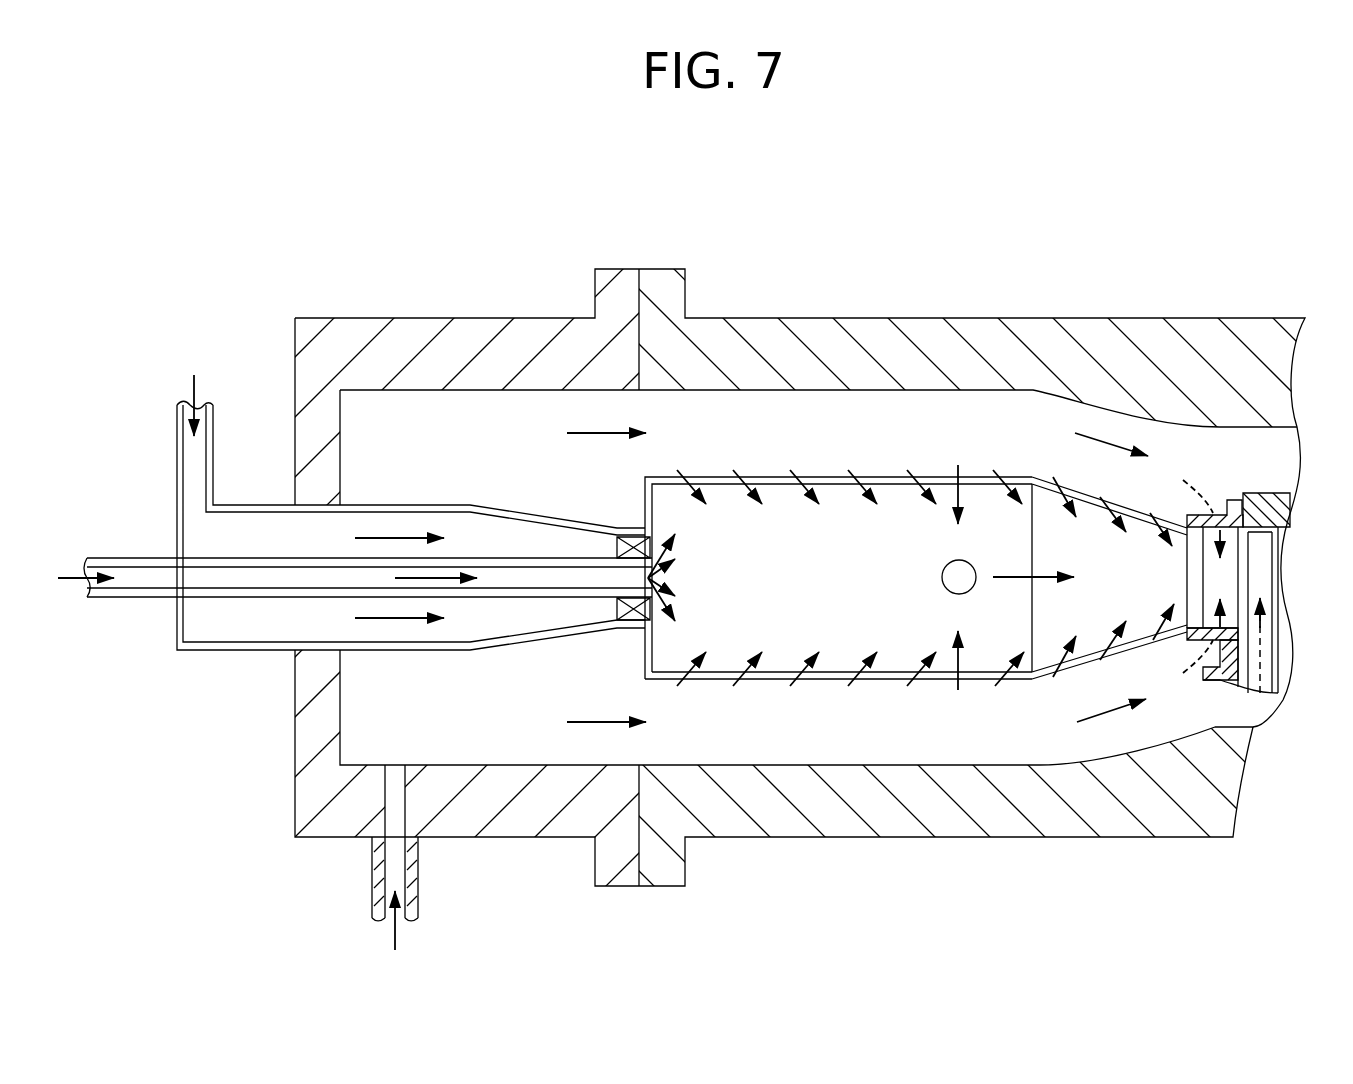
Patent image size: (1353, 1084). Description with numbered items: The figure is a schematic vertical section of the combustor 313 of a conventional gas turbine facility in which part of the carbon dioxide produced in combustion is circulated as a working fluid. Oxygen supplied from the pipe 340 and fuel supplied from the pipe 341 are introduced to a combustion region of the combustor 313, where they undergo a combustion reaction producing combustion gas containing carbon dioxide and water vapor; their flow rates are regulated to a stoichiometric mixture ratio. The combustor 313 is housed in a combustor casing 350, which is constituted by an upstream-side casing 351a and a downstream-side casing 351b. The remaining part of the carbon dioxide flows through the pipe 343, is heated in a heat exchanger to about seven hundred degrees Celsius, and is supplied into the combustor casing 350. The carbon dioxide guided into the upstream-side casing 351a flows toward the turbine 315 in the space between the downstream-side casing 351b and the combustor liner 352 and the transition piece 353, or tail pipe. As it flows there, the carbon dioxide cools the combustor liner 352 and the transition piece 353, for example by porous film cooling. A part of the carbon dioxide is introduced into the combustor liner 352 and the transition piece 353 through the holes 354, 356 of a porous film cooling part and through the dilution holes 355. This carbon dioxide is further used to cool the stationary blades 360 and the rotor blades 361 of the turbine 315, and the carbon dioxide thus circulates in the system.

The combustor casing 350 is at (646, 198).
The upstream-side casing 351a is at (525, 332).
The downstream-side casing 351b is at (700, 332).
The combustor 313 is at (622, 494).
The pipe 340 is at (177, 458).
The pipe 341 is at (141, 597).
The pipe 343 is at (374, 876).
The combustor liner 352 is at (885, 680).
The holes of porous film cooling part 354 is at (800, 680).
The dilution holes 355 is at (943, 578).
The holes of porous film cooling part 356 is at (1063, 650).
The transition piece 353 is at (1147, 645).
The turbine 315 is at (1295, 462).
The stationary blades 360 is at (1227, 565).
The rotor blades 361 is at (1267, 591).